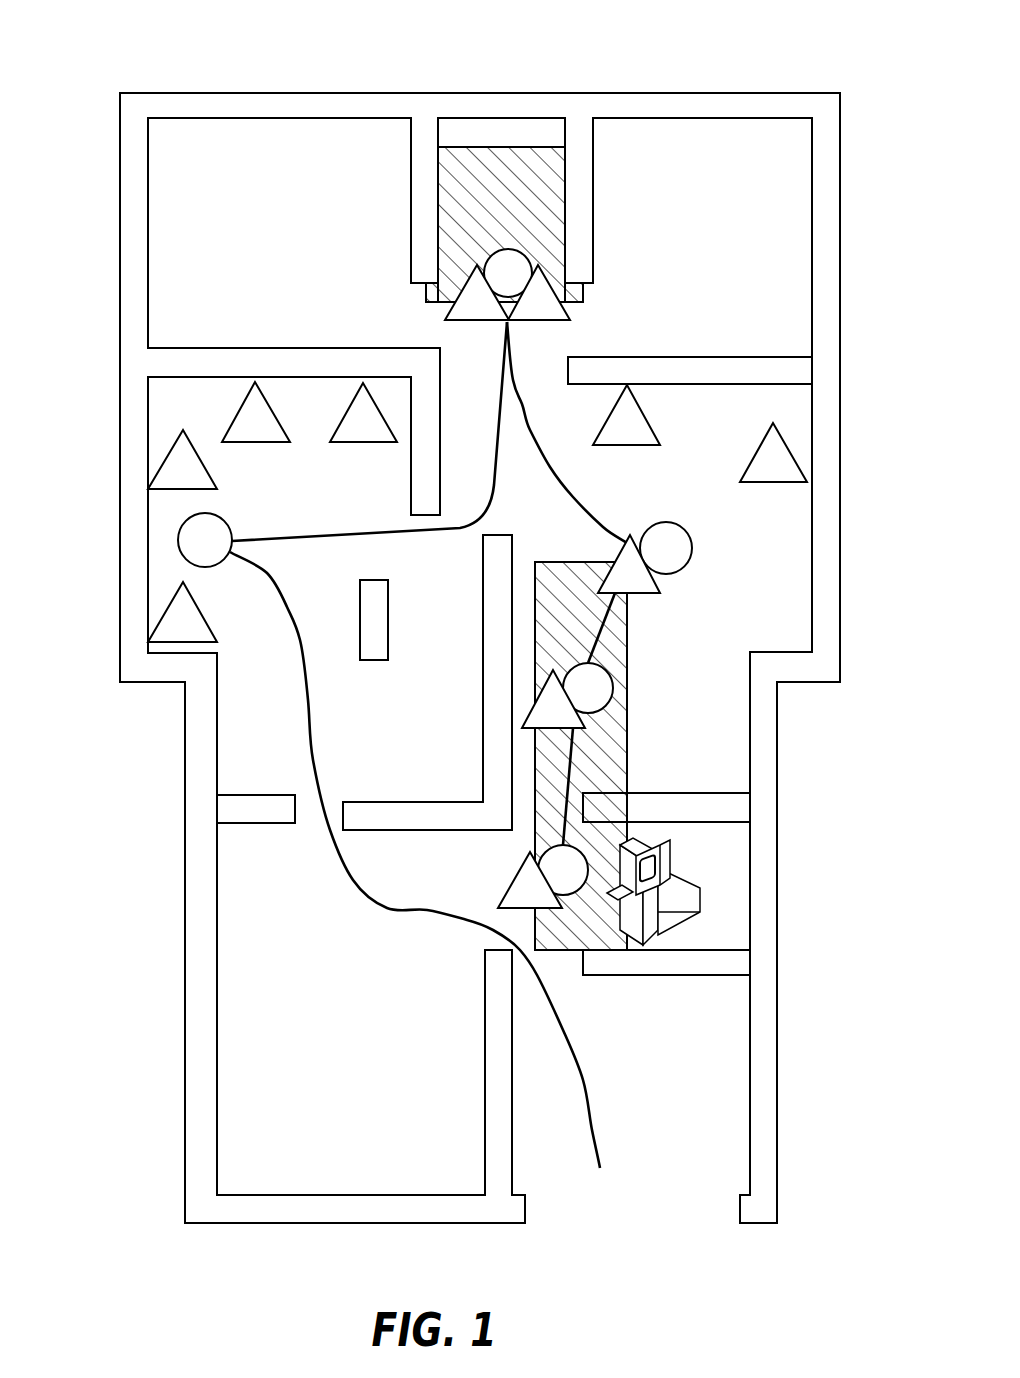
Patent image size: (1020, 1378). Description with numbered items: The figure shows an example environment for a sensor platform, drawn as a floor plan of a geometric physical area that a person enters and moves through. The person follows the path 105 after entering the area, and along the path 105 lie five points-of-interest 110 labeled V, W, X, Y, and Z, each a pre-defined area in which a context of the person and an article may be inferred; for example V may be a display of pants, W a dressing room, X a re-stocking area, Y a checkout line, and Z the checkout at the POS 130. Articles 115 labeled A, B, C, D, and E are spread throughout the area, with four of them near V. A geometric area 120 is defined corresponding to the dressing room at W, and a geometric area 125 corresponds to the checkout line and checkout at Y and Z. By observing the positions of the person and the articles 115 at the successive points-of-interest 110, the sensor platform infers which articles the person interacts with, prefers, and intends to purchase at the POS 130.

The path 105 is at (588, 1080).
The point-of-interest 110 is at (525, 262).
The article 115 is at (243, 402).
The geometric area 120 is at (442, 215).
The geometric area 125 is at (620, 748).
The POS 130 is at (700, 888).